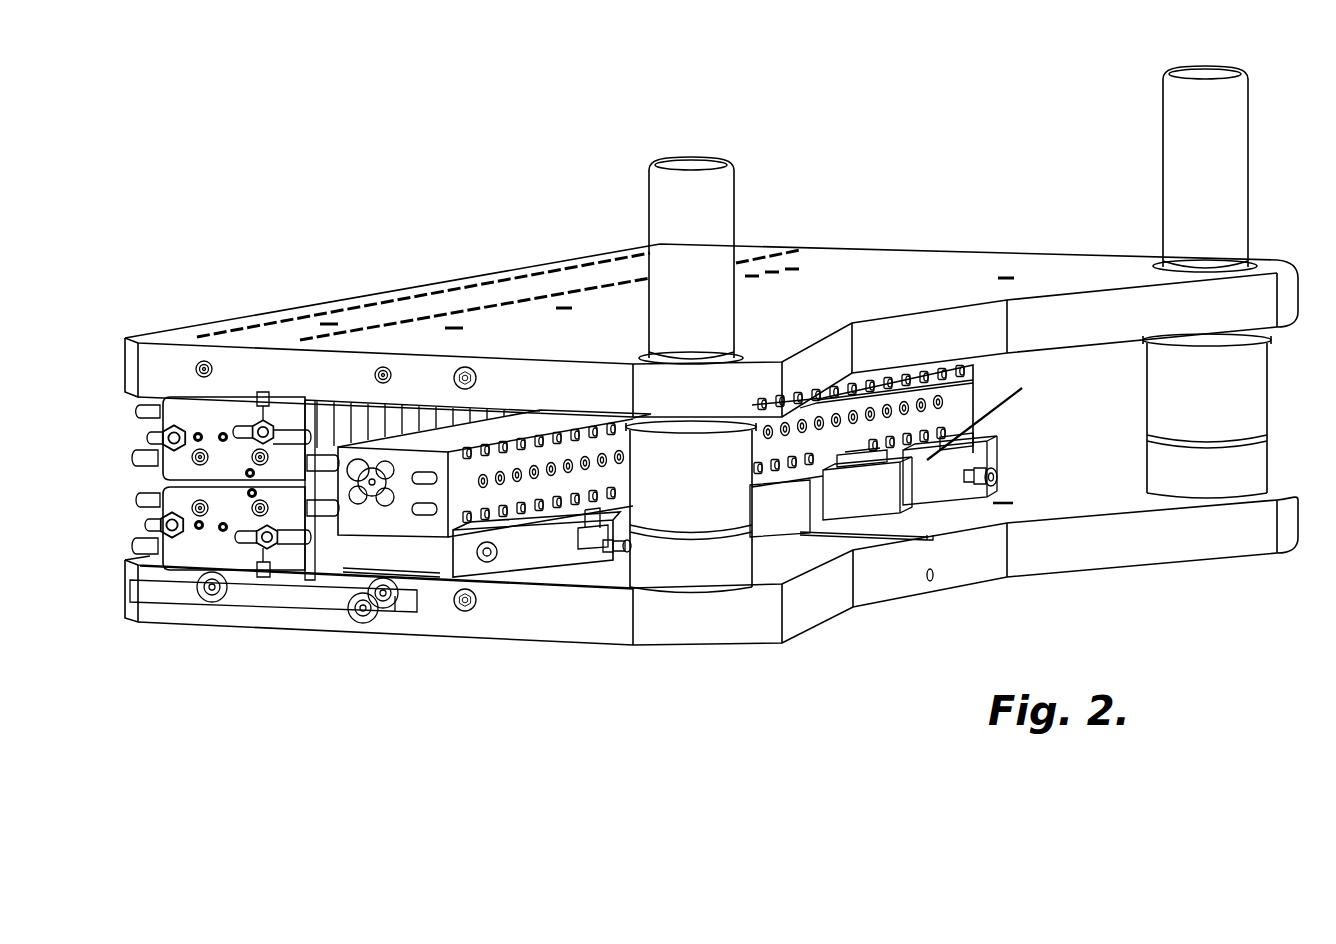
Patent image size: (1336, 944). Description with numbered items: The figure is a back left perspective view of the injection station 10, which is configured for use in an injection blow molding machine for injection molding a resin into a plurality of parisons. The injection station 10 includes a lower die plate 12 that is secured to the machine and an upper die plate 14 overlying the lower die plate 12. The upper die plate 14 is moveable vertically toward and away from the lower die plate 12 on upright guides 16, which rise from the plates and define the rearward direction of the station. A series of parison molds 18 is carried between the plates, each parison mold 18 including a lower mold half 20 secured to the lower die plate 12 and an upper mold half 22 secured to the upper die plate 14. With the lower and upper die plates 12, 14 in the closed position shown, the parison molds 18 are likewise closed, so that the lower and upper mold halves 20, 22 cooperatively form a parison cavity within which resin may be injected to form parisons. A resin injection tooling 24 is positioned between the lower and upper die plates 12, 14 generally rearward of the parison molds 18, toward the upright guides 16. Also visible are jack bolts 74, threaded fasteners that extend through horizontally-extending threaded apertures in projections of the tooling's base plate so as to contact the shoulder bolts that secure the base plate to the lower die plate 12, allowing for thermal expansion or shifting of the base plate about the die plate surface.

The injection station 10 is at (396, 172).
The lower die plate 12 is at (717, 627).
The upper die plate 14 is at (180, 330).
The upright guides 16 is at (722, 190).
The parison molds 18 is at (126, 528).
The lower mold half 20 is at (200, 551).
The upper mold half 22 is at (190, 406).
The resin injection tooling 24 is at (513, 580).
The jack bolt 74 is at (622, 545).